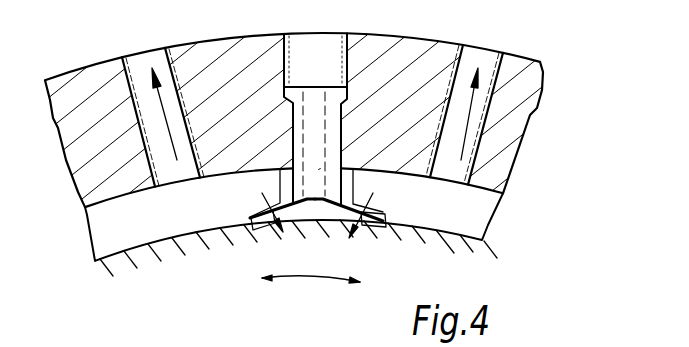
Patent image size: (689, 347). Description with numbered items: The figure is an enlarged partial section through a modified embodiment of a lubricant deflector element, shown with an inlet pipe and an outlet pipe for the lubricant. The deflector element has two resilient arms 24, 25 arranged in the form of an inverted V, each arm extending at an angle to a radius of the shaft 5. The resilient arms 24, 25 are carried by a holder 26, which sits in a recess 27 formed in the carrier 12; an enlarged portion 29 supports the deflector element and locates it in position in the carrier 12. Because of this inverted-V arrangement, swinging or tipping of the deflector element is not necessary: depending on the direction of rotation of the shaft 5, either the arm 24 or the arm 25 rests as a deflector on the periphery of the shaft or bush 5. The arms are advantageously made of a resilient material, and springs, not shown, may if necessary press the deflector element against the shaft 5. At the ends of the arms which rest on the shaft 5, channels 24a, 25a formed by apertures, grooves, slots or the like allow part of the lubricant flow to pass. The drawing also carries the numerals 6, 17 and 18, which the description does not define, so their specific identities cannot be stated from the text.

The shaft 5 is at (407, 236).
The sealing strip carrier ring 6 is at (487, 217).
The carrier 12 is at (530, 110).
The right air channel 17 is at (490, 58).
The left air channel 18 is at (131, 61).
The resilient arm 24 is at (368, 210).
The channel 24a is at (382, 226).
The resilient arm 25 is at (263, 212).
The channel 25a is at (258, 224).
The holder 26 is at (320, 112).
The recess 27 is at (330, 42).
The enlarged portion 29 is at (302, 87).